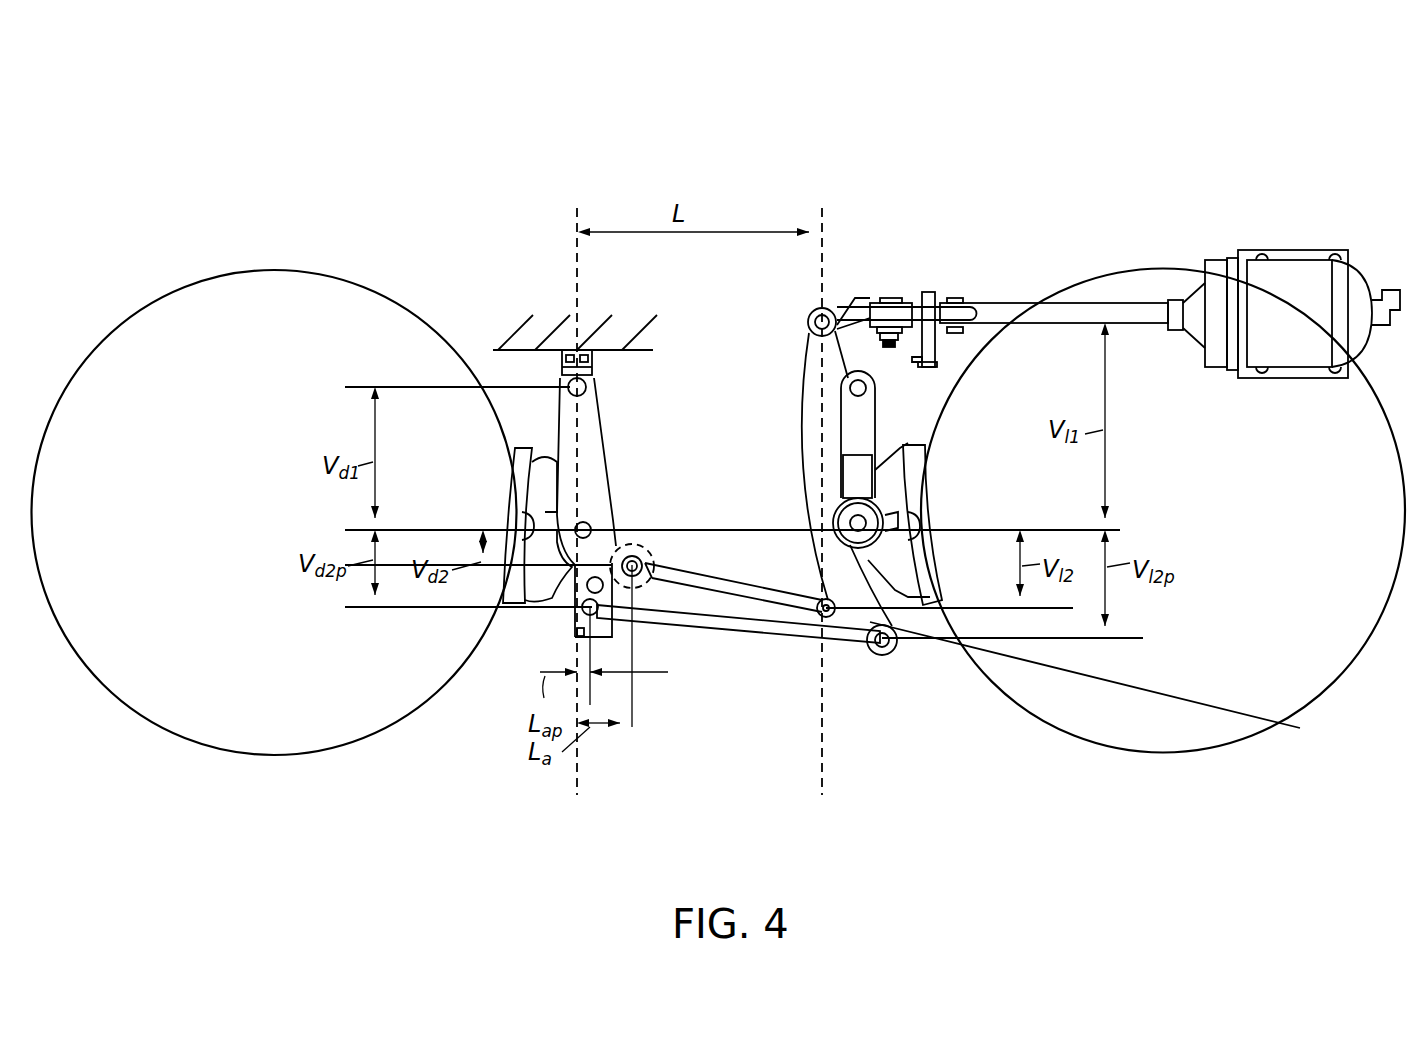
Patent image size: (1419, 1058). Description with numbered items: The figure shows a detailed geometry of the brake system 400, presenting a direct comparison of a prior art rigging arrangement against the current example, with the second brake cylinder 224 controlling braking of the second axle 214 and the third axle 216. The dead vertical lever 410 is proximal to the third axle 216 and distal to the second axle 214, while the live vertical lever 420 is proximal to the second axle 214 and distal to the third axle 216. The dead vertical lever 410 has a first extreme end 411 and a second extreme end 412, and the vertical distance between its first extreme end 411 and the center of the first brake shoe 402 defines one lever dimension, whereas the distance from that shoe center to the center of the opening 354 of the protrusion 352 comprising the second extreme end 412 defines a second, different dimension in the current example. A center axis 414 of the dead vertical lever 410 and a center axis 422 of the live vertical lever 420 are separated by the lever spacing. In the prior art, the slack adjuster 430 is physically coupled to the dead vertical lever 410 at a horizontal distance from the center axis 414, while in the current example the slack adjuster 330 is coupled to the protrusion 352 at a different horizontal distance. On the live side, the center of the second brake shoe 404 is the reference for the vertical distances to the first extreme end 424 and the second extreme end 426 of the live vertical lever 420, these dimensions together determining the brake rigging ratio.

The detailed geometry of the brake system 400 is at (1303, 140).
The second brake cylinder 224 is at (1306, 250).
The third axle 216 is at (243, 528).
The second axle 214 is at (1224, 516).
The first extreme end of the dead vertical lever 411 is at (568, 350).
The dead vertical lever 410 is at (610, 456).
The first brake shoe 402 is at (516, 470).
The second brake shoe 404 is at (925, 466).
The protrusion 352 is at (645, 543).
The opening 354 is at (636, 576).
The slack adjuster 330 is at (724, 580).
The slack adjuster 430 is at (760, 632).
The second extreme end of the dead vertical lever 412 is at (585, 640).
The center axis of the dead vertical lever 414 is at (573, 776).
The center axis of the live vertical lever 422 is at (818, 774).
The first extreme end of the live vertical lever 424 is at (805, 312).
The live vertical lever 420 is at (798, 442).
The second extreme end of the live vertical lever 426 is at (890, 660).